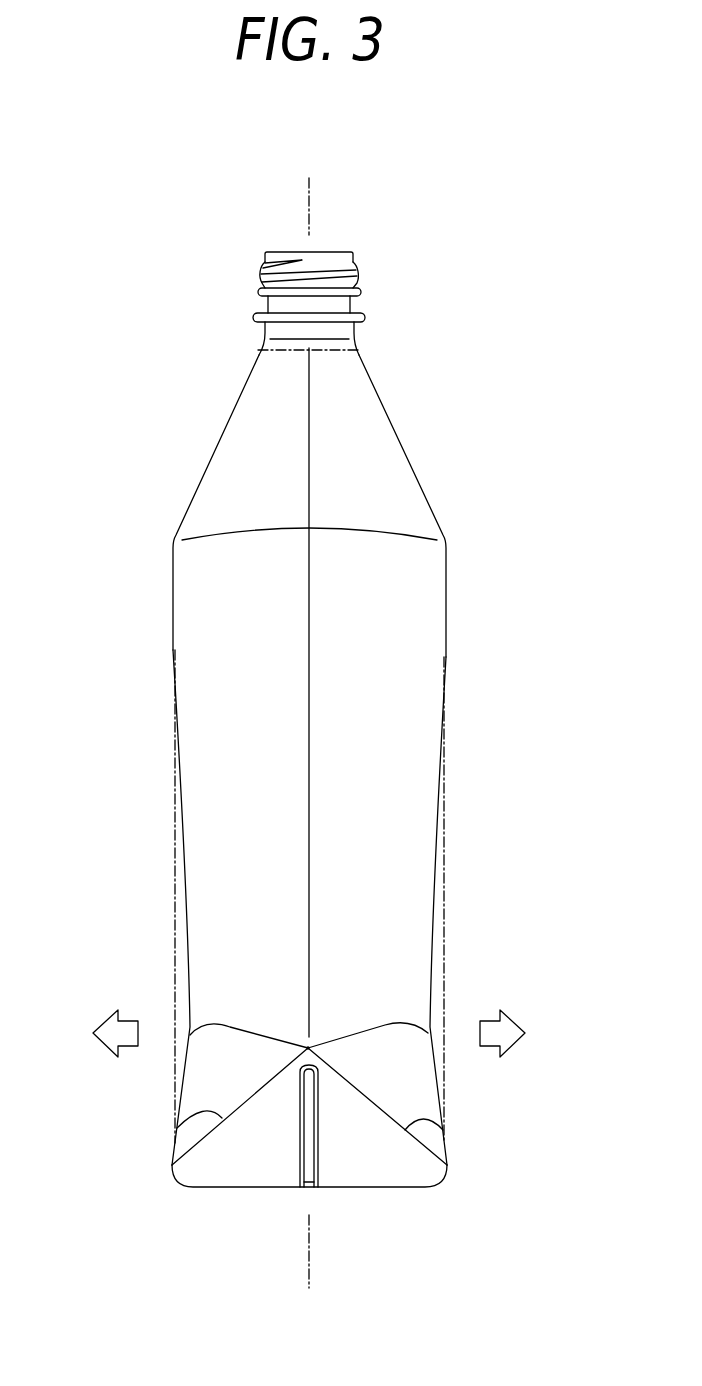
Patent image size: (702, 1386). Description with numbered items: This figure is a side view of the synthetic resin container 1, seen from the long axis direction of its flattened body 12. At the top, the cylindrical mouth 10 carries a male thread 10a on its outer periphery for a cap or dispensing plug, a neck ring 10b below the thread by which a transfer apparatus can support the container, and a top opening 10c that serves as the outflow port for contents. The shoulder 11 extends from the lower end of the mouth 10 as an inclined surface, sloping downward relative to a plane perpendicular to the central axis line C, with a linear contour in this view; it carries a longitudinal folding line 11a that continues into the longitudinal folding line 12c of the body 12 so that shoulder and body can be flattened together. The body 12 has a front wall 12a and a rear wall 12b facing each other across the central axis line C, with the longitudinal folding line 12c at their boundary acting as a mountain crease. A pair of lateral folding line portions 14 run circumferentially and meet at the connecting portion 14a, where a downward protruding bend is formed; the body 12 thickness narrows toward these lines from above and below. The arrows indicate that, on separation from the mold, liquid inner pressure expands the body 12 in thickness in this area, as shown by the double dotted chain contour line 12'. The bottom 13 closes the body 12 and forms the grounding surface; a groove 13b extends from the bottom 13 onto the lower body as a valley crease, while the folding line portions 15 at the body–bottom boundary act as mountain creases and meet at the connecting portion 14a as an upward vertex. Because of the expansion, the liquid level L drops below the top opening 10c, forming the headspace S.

The synthetic resin container 1 is at (473, 303).
The mouth 10 is at (264, 300).
The male thread 10a is at (262, 265).
The neck ring 10b is at (255, 315).
The top opening 10c is at (284, 249).
The shoulder 11 is at (421, 480).
The longitudinal folding line 11a is at (309, 443).
The body 12 is at (308, 882).
The front wall 12a is at (232, 650).
The rear wall 12b is at (415, 705).
The longitudinal folding line 12c is at (308, 750).
The contour line of the body 12' is at (305, 896).
The bottom 13 is at (425, 1191).
The groove 13b is at (311, 1162).
The lateral folding line portion 14 is at (230, 1027).
The connecting portion 14a is at (308, 1048).
The folding line portion 15 is at (175, 1125).
The central axis line C is at (310, 716).
The headspace S is at (332, 332).
The liquid level L is at (345, 350).